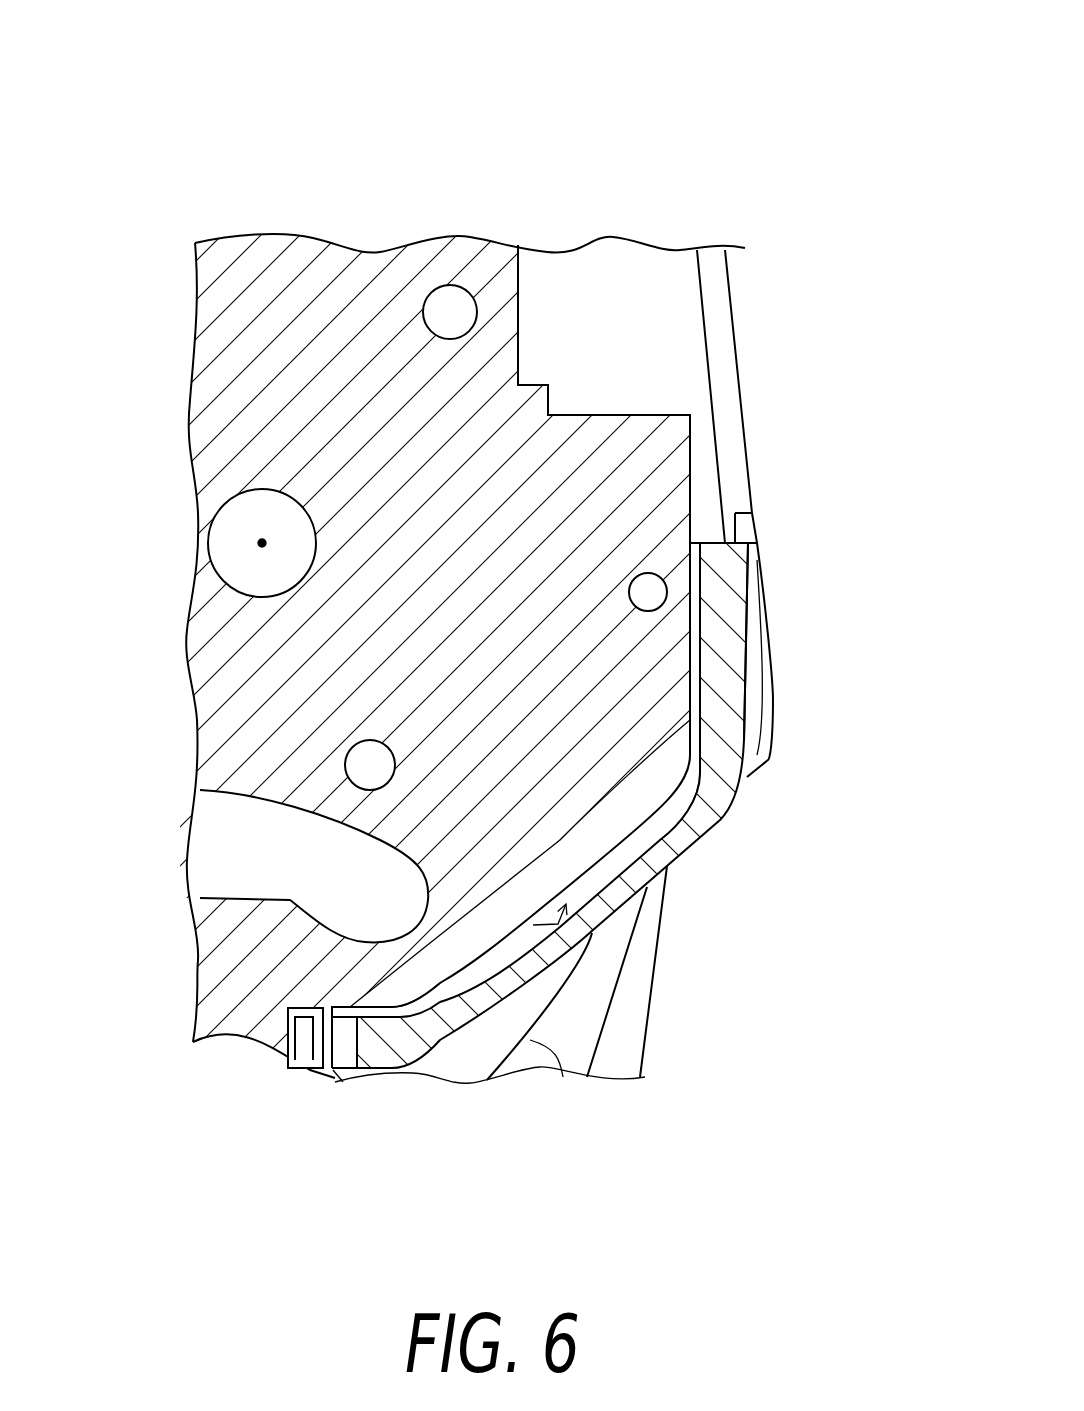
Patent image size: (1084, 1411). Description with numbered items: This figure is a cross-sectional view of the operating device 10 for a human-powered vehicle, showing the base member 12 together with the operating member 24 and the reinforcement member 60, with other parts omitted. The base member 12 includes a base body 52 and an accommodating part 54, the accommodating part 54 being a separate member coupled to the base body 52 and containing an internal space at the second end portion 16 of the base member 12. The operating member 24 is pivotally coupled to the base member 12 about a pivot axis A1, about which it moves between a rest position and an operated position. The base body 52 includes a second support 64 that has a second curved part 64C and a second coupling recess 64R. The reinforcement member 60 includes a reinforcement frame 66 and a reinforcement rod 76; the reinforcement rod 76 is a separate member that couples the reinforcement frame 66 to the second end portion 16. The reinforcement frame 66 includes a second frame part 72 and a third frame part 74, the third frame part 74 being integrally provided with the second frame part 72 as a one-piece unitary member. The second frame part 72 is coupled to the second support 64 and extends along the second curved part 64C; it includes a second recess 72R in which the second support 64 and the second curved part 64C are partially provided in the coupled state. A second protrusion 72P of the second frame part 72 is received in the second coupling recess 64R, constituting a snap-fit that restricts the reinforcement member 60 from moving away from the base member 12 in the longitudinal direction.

The operating device 10 is at (473, 100).
The base member 12 is at (262, 180).
The second end portion 16 is at (692, 217).
The accommodating part 54 is at (732, 267).
The pivot axis A1 is at (258, 543).
The base body 52 is at (193, 693).
The reinforcement rod 76 is at (650, 572).
The reinforcement member 60 is at (866, 487).
The reinforcement frame 66 is at (782, 558).
The third frame part 74 is at (778, 643).
The second frame part 72 is at (498, 1020).
The second recess 72R is at (607, 863).
The second protrusion 72P is at (307, 1060).
The second support 64 is at (595, 950).
The second curved part 64C is at (605, 930).
The second coupling recess 64R is at (302, 1050).
The operating member 24 is at (448, 1092).